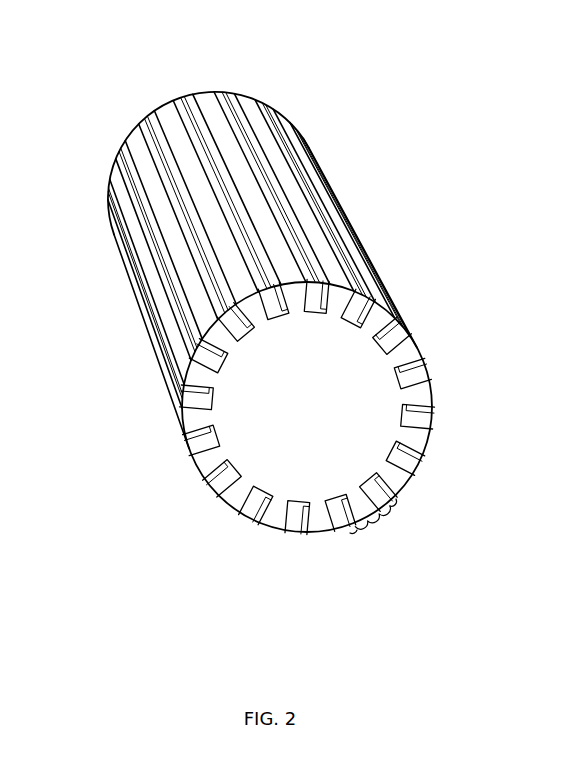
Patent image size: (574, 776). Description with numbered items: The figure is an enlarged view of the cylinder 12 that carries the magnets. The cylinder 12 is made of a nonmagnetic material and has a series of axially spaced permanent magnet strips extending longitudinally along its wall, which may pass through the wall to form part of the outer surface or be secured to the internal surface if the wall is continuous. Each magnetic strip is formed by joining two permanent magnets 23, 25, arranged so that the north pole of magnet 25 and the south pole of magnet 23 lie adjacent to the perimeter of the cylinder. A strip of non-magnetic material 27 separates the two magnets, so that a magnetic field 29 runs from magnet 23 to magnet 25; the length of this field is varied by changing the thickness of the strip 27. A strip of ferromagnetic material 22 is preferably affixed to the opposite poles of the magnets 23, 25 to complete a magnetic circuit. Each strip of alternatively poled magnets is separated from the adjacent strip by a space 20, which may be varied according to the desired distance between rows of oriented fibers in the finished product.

The cylinder 12 is at (221, 504).
The space 20 is at (368, 528).
The strip of ferromagnetic material 22 is at (282, 318).
The permanent magnet 23 is at (199, 149).
The permanent magnet 25 is at (213, 147).
The strip of non-magnetic material 27 is at (196, 122).
The magnetic field 29 is at (391, 505).